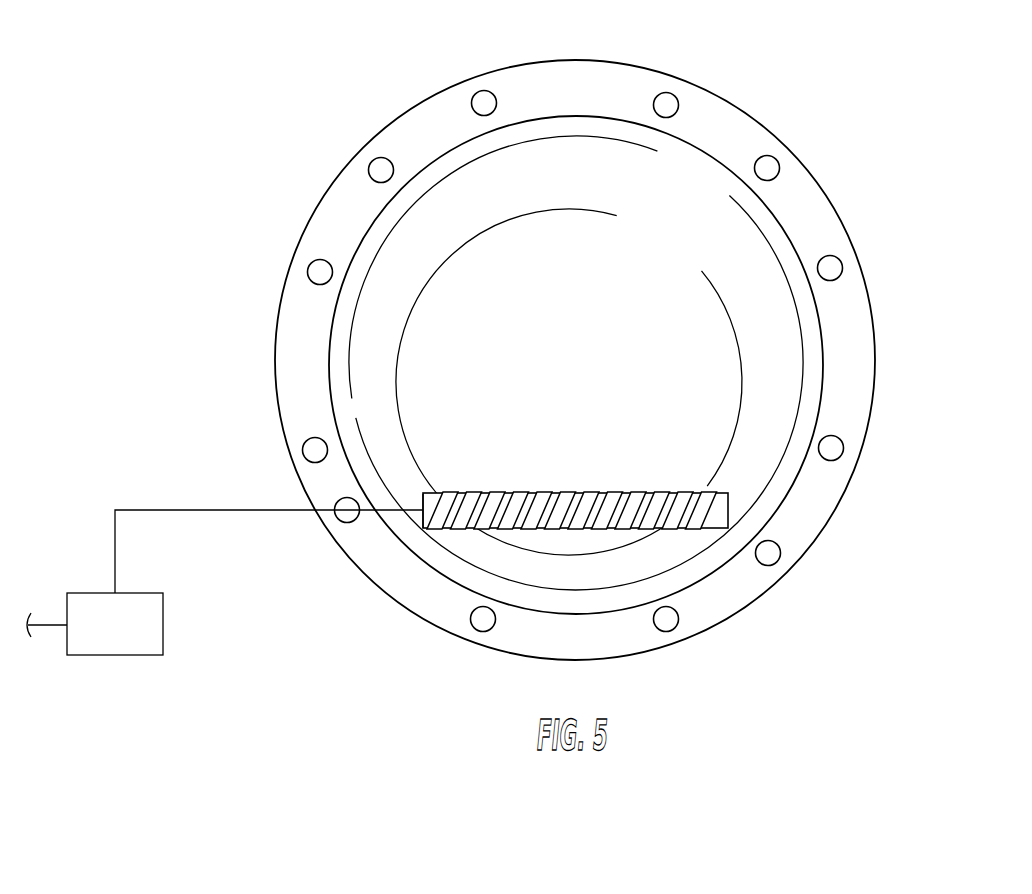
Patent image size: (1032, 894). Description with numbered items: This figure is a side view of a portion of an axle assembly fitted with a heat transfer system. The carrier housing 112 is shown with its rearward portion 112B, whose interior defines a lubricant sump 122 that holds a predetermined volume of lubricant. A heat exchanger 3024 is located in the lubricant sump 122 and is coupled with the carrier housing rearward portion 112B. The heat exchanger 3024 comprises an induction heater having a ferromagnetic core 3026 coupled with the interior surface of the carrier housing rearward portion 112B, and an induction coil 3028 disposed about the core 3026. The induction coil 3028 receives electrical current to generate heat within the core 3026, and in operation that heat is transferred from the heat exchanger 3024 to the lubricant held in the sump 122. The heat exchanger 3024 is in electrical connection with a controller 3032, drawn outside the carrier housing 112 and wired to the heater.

The carrier housing 112 is at (730, 103).
The carrier housing rearward portion 112B is at (810, 198).
The lubricant sump 122 is at (465, 575).
The heat exchanger 3024 is at (418, 543).
The ferromagnetic core 3026 is at (672, 566).
The induction coil 3028 is at (667, 522).
The controller 3032 is at (115, 655).